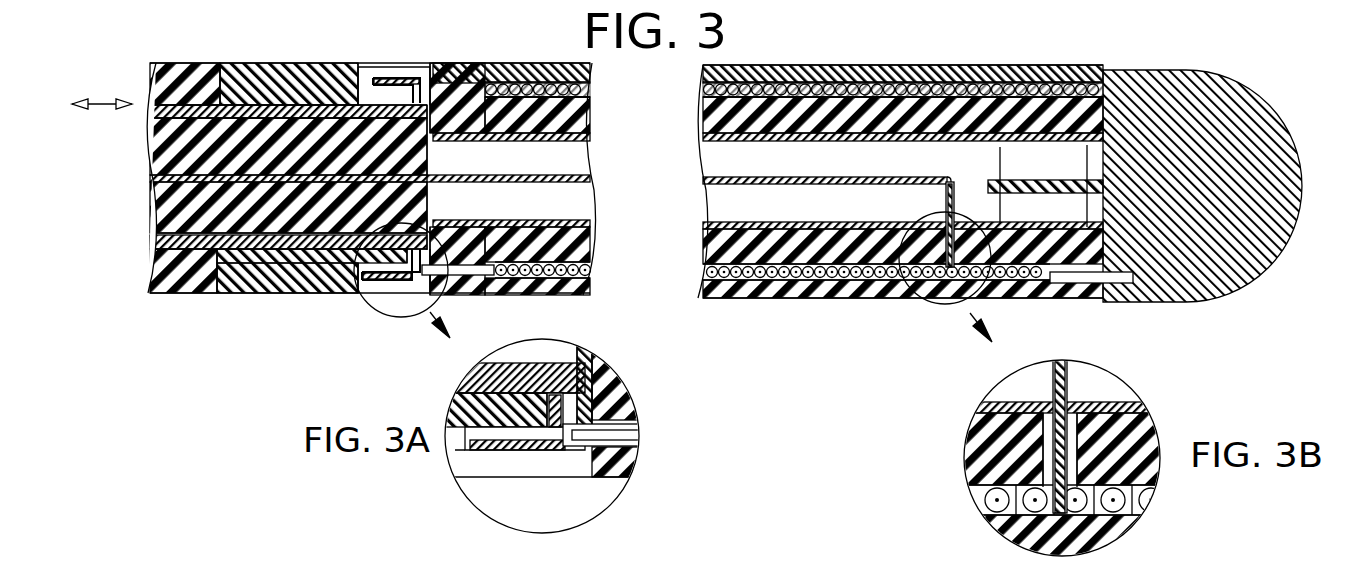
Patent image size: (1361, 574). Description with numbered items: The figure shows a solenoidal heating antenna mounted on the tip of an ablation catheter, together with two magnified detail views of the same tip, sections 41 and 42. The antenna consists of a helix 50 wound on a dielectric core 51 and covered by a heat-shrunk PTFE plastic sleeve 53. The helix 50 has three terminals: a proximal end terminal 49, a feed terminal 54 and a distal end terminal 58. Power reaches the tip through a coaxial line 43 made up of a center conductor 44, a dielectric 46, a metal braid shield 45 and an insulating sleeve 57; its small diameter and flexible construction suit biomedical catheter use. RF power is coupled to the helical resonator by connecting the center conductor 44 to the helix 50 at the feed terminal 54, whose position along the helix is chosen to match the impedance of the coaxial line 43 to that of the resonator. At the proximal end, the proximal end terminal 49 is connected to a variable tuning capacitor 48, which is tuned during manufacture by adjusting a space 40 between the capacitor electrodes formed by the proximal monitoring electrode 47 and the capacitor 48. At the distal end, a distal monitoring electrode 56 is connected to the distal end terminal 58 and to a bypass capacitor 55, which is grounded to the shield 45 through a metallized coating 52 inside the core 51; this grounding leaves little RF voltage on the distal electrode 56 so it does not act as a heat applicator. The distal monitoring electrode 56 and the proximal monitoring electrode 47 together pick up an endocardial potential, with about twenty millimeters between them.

In FIG. 3A, the space 40 is at (562, 440).
In FIG. 3, the proximal section 41 is at (226, 561).
In FIG. 3A, the distal section 42 is at (488, 561).
In FIG. 3, the coaxial line 43 is at (102, 89).
In FIG. 3, the center conductor 44 is at (150, 178).
In FIG. 3, the metal braid shield 45 is at (150, 242).
In FIG. 3, the dielectric 46 is at (150, 143).
In FIG. 3, the proximal monitoring electrode 47 is at (292, 288).
In FIG. 3, the variable tuning capacitor 48 is at (386, 76).
In FIG. 3A, the variable tuning capacitor 48 is at (465, 447).
In FIG. 3A, the proximal end terminal 49 is at (583, 412).
In FIG. 3, the helix 50 is at (703, 277).
In FIG. 3, the dielectric core 51 is at (703, 249).
In FIG. 3, the metallized coating 52 is at (703, 225).
In FIG. 3, the heat-shrunk PTFE plastic sleeve 53 is at (800, 288).
In FIG. 3, the feed terminal 54 is at (930, 300).
In FIG. 3B, the feed terminal 54 is at (1000, 530).
In FIG. 3, the bypass capacitor 55 is at (1000, 166).
In FIG. 3, the distal monitoring electrode 56 is at (1236, 284).
In FIG. 3, the insulating sleeve 57 is at (190, 288).
In FIG. 3, the distal end terminal 58 is at (1130, 303).